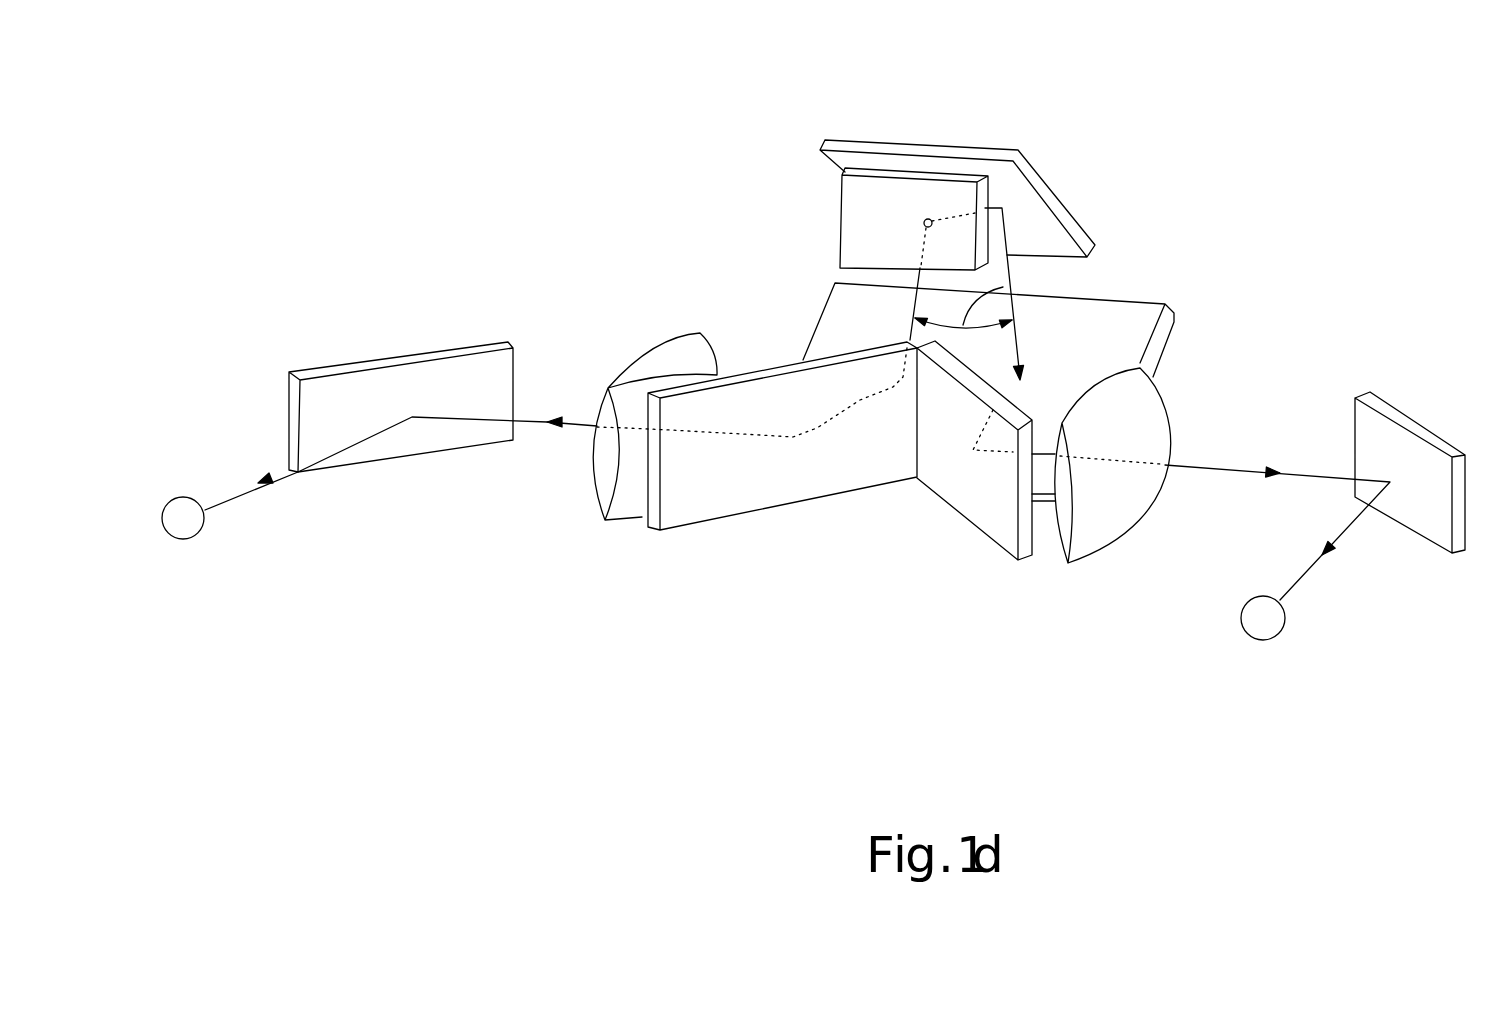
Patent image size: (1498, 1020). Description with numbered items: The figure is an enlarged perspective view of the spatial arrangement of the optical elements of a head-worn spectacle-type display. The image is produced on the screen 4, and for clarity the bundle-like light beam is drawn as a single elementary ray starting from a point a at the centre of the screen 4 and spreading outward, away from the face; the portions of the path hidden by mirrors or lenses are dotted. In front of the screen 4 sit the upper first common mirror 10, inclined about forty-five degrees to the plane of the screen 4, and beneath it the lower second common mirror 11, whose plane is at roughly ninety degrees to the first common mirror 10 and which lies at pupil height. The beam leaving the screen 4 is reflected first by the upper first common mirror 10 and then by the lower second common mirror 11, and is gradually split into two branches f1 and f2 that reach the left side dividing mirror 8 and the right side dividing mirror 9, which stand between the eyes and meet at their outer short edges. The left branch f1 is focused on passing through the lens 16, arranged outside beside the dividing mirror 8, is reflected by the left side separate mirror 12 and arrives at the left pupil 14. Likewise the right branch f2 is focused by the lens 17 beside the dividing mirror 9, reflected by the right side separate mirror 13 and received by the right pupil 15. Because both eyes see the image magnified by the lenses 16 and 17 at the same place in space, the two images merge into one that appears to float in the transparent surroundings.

The screen 4 is at (843, 203).
The beam splitting point a is at (923, 225).
The left side dividing mirror 8 is at (987, 535).
The right side dividing mirror 9 is at (795, 505).
The upper first common mirror 10 is at (977, 143).
The lower second common mirror 11 is at (1153, 300).
The left side separate mirror 12 is at (1402, 420).
The right side separate mirror 13 is at (418, 350).
The left pupil 14 is at (1280, 630).
The right pupil 15 is at (188, 533).
The lens 16 is at (1117, 540).
The lens 17 is at (583, 520).
The left side light path branch f1 is at (1125, 460).
The right side light path branch f2 is at (930, 220).